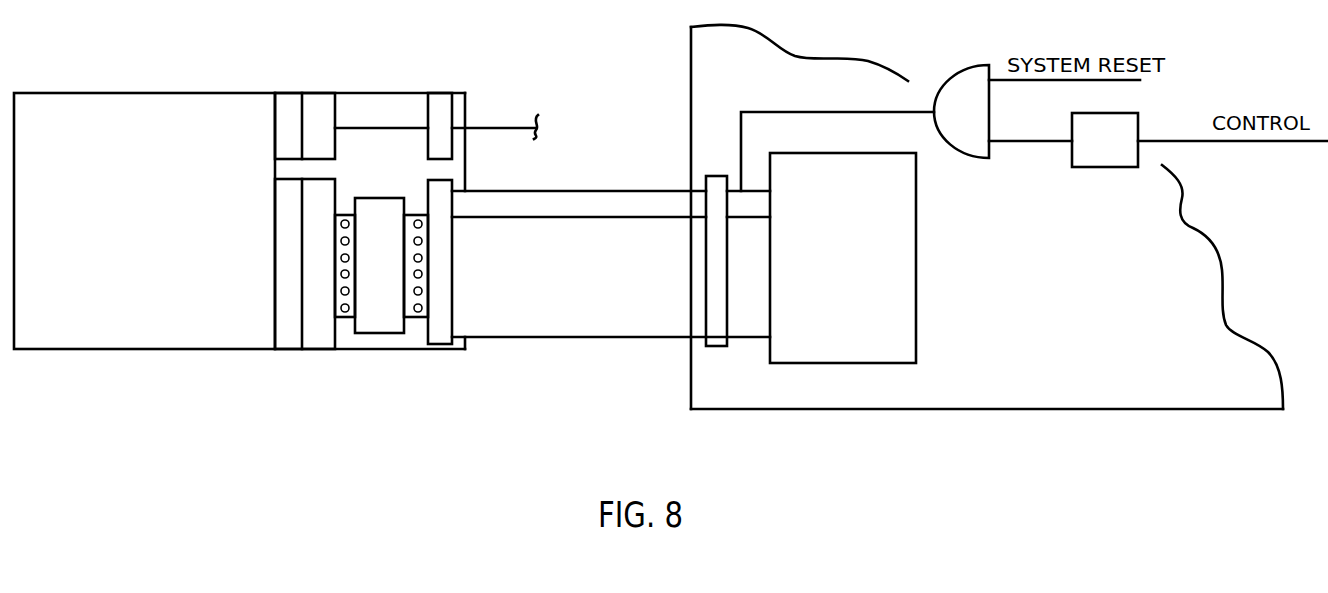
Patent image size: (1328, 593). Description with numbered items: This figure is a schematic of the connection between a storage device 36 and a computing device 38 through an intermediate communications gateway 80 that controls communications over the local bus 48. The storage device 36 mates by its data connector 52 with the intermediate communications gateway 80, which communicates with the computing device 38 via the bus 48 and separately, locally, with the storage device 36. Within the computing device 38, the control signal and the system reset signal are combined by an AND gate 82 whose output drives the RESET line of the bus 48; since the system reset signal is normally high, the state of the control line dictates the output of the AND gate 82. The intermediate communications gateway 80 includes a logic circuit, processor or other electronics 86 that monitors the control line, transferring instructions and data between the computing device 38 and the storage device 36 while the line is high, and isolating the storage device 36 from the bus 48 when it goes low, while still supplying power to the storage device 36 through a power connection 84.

The storage device 36 is at (128, 102).
The power connection 84 is at (287, 108).
The data connector 52 is at (292, 337).
The intermediate communications gateway 80 is at (367, 342).
The electronics 86 is at (397, 271).
The local bus 48 is at (576, 318).
The computing device 38 is at (1148, 382).
The AND gate 82 is at (960, 85).